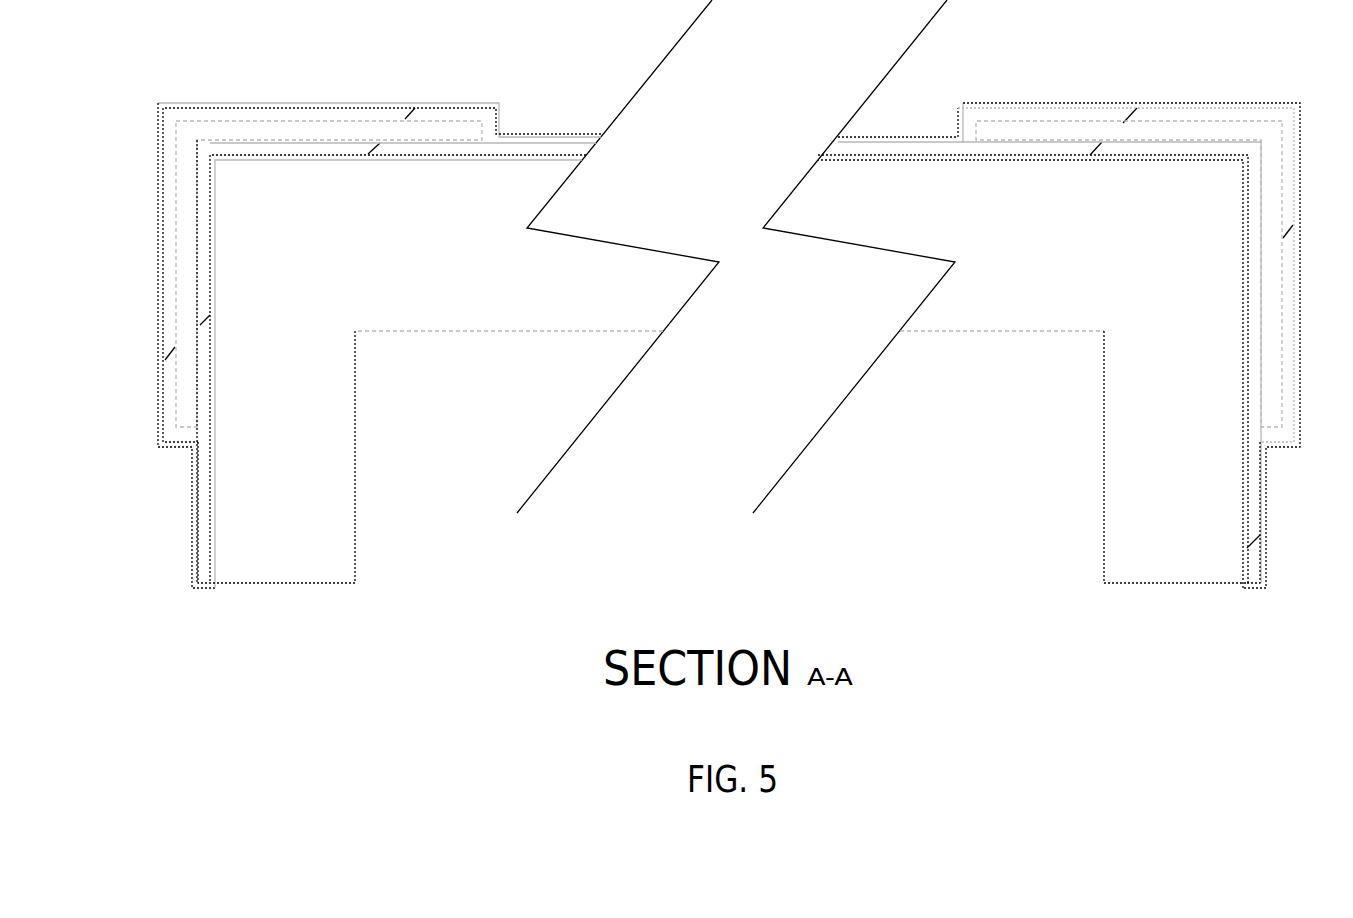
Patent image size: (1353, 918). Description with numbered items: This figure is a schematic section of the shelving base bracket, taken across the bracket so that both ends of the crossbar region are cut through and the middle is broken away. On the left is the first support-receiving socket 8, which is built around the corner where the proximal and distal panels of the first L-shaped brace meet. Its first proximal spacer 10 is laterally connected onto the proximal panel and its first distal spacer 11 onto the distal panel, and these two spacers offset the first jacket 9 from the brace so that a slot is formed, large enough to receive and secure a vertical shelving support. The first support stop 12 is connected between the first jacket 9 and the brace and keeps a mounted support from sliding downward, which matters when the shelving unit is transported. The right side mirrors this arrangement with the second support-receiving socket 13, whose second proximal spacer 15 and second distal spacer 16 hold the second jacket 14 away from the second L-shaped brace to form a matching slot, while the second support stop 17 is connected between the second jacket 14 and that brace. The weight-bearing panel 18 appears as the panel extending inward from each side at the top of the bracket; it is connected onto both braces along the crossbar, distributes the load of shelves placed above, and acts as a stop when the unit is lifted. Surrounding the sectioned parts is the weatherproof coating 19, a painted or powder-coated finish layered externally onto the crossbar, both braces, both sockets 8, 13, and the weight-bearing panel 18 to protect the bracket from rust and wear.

The first support-receiving socket 8 is at (392, 104).
The first jacket 9 is at (304, 115).
The first proximal spacer 10 is at (492, 128).
The first distal spacer 11 is at (181, 437).
The first support stop 12 is at (182, 176).
The second support-receiving socket 13 is at (1177, 104).
The second jacket 14 is at (1294, 257).
The second proximal spacer 15 is at (963, 127).
The second distal spacer 16 is at (1272, 447).
The second support stop 17 is at (1277, 350).
The weight-bearing panel 18 is at (497, 337).
The weatherproof coating 19 is at (556, 137).